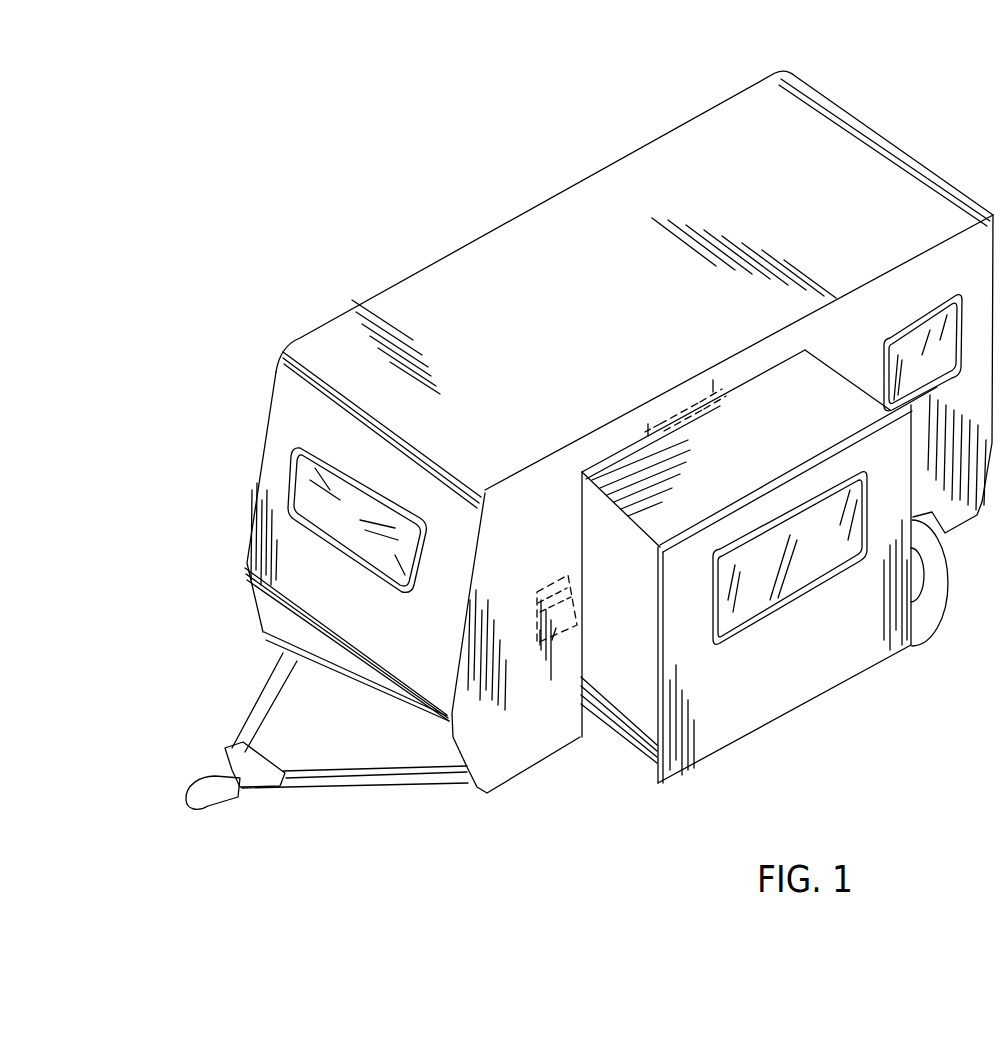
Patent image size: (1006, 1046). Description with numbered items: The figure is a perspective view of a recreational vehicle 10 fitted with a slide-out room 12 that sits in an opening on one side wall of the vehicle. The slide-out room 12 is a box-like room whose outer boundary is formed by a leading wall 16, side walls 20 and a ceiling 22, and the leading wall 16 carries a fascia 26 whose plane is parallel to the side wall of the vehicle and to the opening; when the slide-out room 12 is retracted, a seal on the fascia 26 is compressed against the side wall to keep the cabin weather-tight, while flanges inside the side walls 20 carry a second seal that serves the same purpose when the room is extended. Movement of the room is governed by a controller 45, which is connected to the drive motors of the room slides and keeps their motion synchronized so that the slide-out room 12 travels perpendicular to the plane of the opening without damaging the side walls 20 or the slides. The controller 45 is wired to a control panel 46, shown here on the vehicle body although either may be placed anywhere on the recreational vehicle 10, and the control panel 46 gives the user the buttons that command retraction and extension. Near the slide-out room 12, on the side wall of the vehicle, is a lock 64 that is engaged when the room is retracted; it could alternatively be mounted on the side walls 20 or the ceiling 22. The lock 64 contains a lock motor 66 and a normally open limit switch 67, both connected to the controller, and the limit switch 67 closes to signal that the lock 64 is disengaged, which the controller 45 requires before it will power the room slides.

The recreational vehicle 10 is at (396, 120).
The slide-out room 12 is at (803, 724).
The leading wall 16 is at (842, 643).
The side walls 20 is at (620, 680).
The ceiling 22 is at (773, 403).
The fascia 26 is at (658, 785).
The controller 45 is at (556, 636).
The control panel 46 is at (555, 577).
The lock 64 is at (683, 396).
The lock motor 66 is at (647, 427).
The limit switch 67 is at (713, 381).